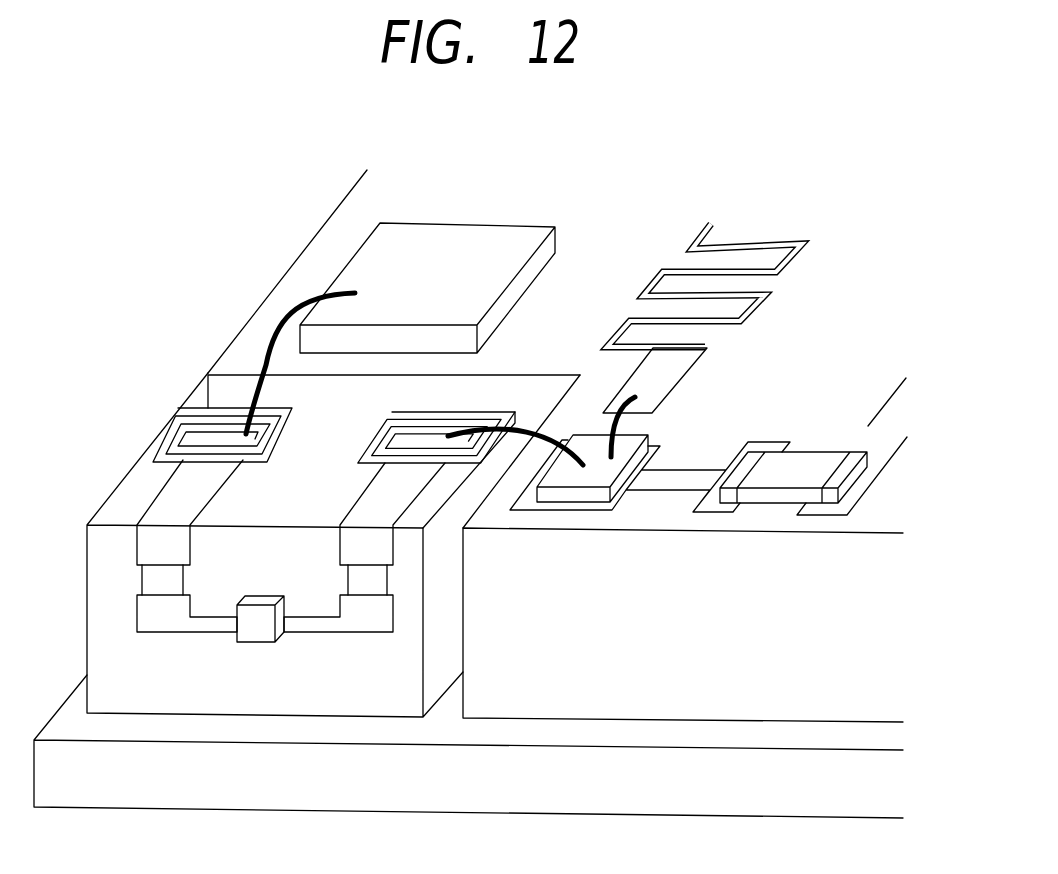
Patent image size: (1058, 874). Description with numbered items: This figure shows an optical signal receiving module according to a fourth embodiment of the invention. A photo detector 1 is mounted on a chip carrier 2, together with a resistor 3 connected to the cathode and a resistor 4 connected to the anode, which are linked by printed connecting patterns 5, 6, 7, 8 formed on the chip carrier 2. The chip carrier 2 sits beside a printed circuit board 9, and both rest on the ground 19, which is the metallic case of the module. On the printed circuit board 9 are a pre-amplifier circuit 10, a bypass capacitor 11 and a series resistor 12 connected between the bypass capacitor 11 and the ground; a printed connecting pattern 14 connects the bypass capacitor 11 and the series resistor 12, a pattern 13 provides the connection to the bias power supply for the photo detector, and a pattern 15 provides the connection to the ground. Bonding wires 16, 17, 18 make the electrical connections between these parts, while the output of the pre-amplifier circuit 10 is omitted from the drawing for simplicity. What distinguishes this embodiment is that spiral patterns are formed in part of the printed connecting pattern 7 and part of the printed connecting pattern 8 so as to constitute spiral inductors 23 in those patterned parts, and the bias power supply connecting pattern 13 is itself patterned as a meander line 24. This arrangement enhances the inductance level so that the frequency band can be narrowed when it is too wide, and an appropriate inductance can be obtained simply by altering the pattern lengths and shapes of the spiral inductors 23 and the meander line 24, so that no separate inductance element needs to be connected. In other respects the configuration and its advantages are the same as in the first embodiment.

The photo detector 1 is at (255, 625).
The chip carrier 2 is at (135, 693).
The resistor connected to the cathode 3 is at (367, 583).
The resistor connected to the anode 4 is at (160, 582).
The printed connecting pattern 5 is at (367, 618).
The printed connecting pattern 6 is at (161, 617).
The printed connecting pattern 7 is at (380, 493).
The printed connecting pattern 8 is at (187, 493).
The printed circuit board 9 is at (545, 705).
The pre-amplifier circuit 10 is at (483, 243).
The bypass capacitor 11 is at (572, 493).
The series resistor 12 is at (770, 497).
The pattern of connection to the bias power supply 13 is at (663, 378).
The printed connecting pattern 14 is at (690, 480).
The pattern of connection to the ground 15 is at (882, 425).
The bonding wire 16 is at (620, 398).
The bonding wire 17 is at (527, 430).
The bonding wire 18 is at (300, 318).
The ground (metallic case) 19 is at (777, 810).
The spiral inductor 23 is at (375, 443).
The meander line 24 is at (748, 242).